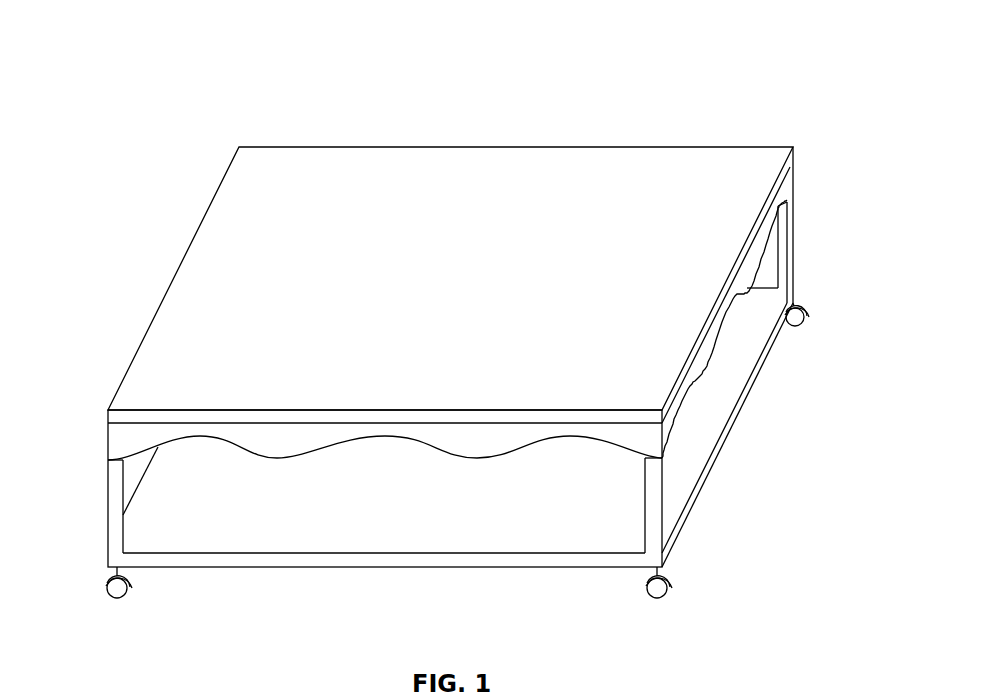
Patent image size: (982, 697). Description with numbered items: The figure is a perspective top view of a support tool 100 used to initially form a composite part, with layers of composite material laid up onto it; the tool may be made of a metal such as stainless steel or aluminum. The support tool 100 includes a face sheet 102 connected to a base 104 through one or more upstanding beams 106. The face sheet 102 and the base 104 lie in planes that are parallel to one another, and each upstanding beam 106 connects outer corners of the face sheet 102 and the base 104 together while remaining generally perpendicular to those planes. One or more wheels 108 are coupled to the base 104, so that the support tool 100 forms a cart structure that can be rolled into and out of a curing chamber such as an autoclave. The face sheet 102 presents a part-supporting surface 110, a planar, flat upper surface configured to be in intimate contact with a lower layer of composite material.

The support tool 100 is at (453, 336).
The face sheet 102 is at (453, 371).
The base 104 is at (497, 530).
The upstanding beam 106 is at (115, 512).
The wheel 108 is at (118, 594).
The part-supporting surface 110 is at (287, 170).